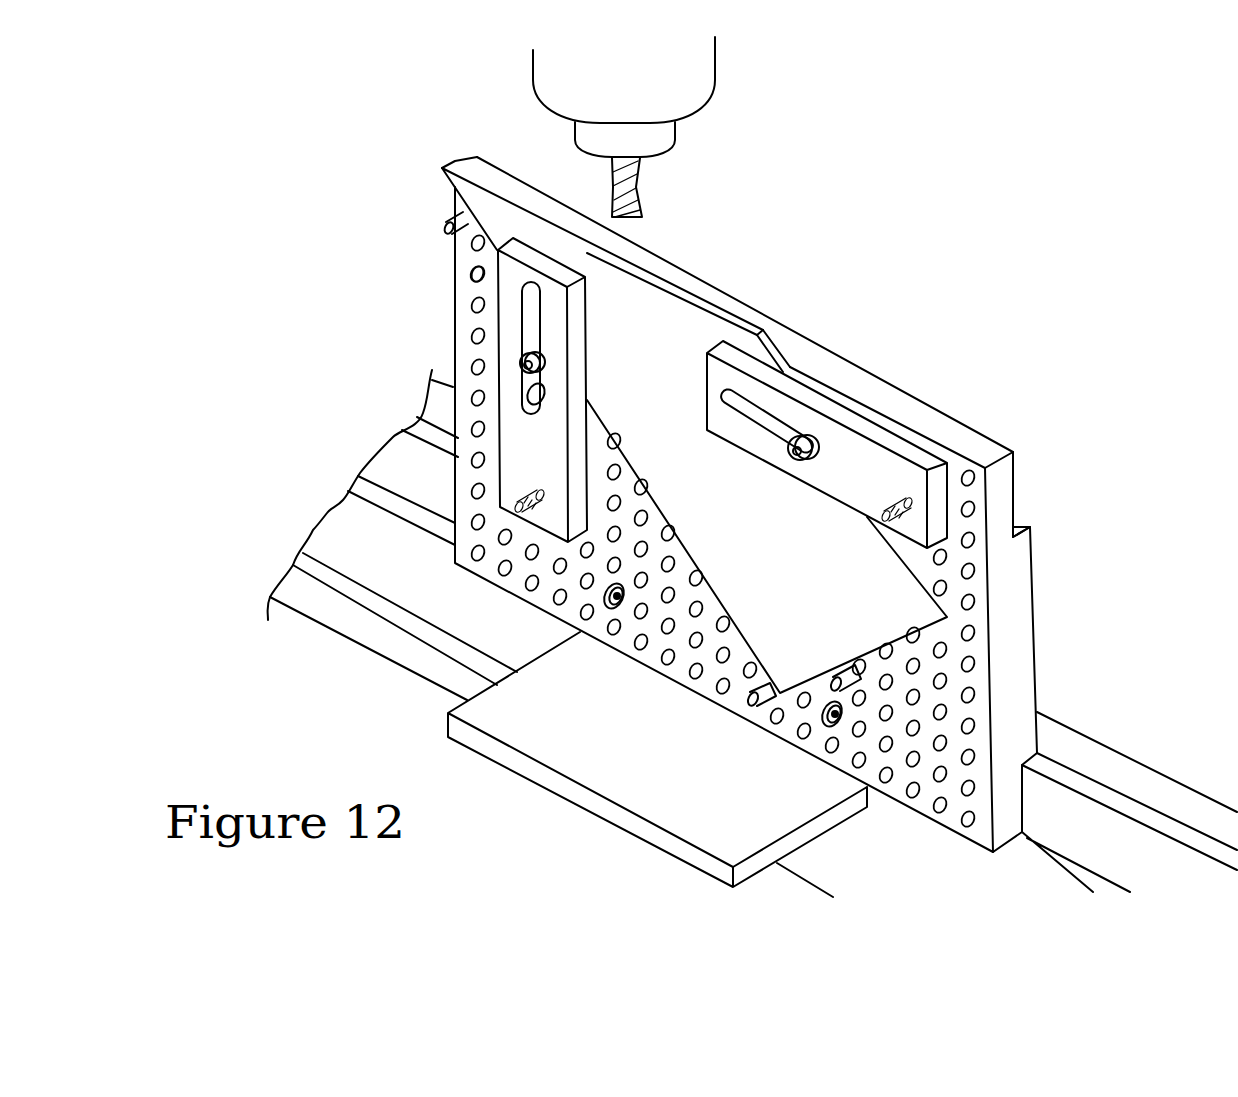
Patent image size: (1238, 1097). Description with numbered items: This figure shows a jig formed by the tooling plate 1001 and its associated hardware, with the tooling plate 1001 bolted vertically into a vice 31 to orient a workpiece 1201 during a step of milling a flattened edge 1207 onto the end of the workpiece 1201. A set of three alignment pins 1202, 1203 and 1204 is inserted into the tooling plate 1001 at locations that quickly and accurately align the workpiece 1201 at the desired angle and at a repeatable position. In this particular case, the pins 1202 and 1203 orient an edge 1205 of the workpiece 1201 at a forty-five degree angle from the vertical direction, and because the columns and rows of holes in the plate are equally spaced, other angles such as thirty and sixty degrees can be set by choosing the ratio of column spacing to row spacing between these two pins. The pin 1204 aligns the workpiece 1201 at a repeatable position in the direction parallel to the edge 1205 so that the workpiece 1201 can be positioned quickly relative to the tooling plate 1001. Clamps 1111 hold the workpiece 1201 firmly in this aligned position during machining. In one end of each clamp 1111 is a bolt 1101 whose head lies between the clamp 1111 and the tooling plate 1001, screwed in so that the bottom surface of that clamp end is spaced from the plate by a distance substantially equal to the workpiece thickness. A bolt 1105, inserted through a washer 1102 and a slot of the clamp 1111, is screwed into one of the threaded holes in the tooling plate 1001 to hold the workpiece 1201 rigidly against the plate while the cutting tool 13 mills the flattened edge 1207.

The cutting tool / end mill 13 is at (640, 183).
The flattened edge 1207 is at (500, 195).
The alignment pin 1202 is at (462, 220).
The edge of workpiece 1205 is at (477, 242).
The washer 1102 is at (475, 277).
The clamp 1111 is at (507, 320).
The tooling plate 1001 is at (470, 443).
The workpiece 1201 is at (663, 305).
The bolt 1101 is at (1000, 447).
The bolt 1105 is at (1030, 527).
The alignment pin 1203 is at (1003, 632).
The alignment pin 1204 is at (853, 675).
The vice 31 is at (540, 738).